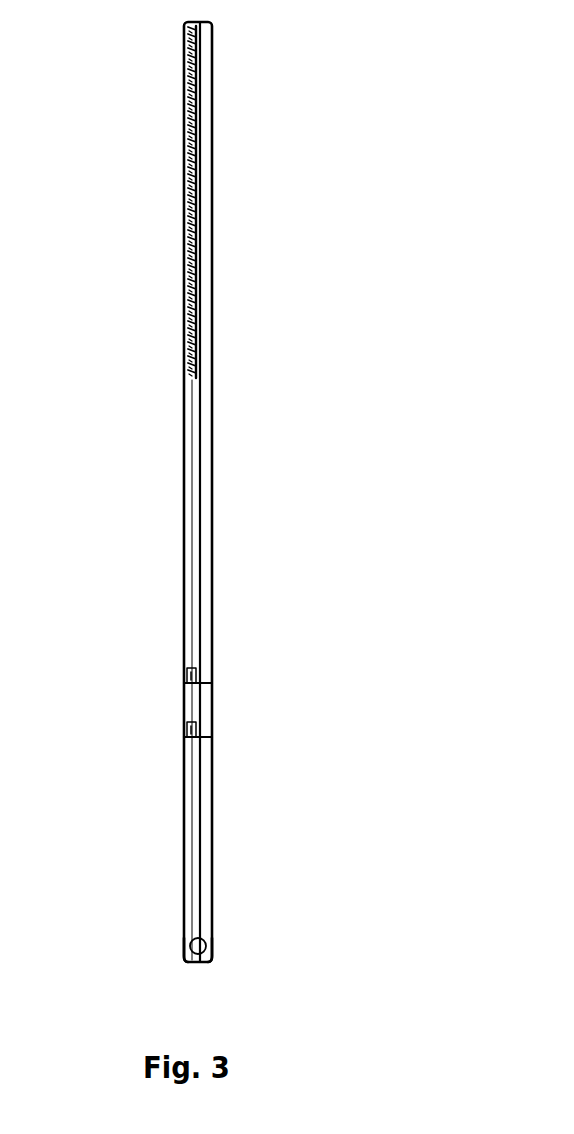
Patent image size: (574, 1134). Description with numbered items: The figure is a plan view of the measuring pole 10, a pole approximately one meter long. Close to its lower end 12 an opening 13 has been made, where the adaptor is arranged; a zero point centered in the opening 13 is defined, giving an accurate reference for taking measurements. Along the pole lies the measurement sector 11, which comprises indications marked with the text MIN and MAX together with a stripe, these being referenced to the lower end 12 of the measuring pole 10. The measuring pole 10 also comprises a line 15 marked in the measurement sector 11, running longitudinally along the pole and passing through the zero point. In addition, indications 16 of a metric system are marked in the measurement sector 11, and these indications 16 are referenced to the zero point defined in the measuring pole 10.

The measuring pole 10 is at (355, 400).
The measurement sector 11 is at (207, 597).
The lower end 12 is at (210, 963).
The opening 13 is at (186, 946).
The line 15 is at (195, 500).
The indications of a metric system 16 is at (197, 162).
The MAX indication MAX is at (185, 680).
The MIN indication MIN is at (185, 735).